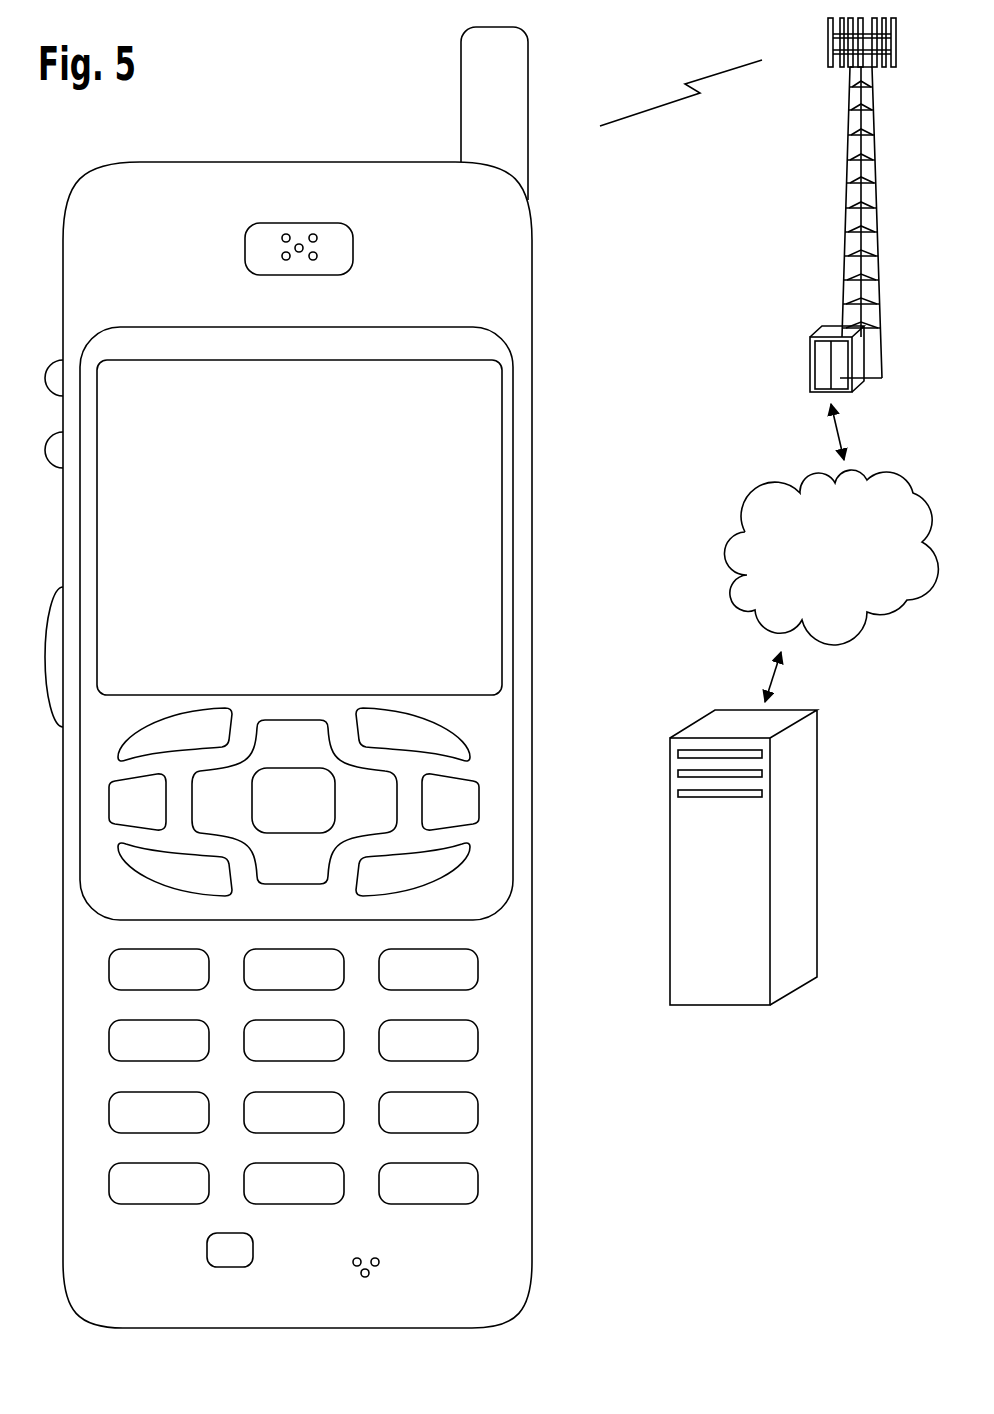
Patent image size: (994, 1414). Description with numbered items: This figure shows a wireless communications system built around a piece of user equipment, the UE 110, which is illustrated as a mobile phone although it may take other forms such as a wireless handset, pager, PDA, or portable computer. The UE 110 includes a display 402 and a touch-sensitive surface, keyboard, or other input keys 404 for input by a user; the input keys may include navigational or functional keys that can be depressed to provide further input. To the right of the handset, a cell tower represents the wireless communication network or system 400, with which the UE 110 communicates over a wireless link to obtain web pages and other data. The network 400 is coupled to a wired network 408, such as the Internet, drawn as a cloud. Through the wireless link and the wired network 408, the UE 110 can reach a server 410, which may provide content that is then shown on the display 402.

The UE 110 is at (328, 692).
The wireless communication network or system 400 is at (848, 219).
The display 402 is at (503, 375).
The input keys 404 is at (545, 1265).
The wired network 408 is at (749, 611).
The server 410 is at (718, 1005).